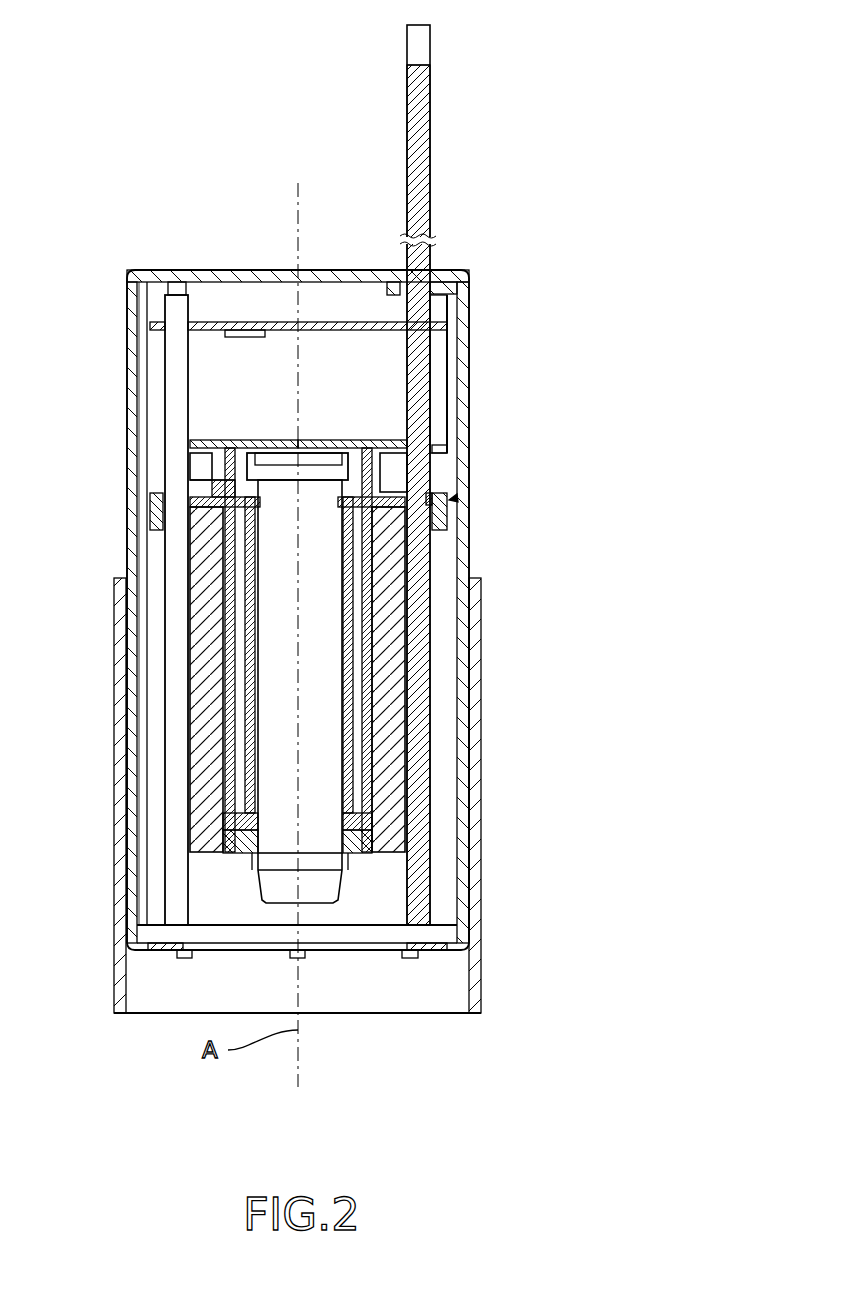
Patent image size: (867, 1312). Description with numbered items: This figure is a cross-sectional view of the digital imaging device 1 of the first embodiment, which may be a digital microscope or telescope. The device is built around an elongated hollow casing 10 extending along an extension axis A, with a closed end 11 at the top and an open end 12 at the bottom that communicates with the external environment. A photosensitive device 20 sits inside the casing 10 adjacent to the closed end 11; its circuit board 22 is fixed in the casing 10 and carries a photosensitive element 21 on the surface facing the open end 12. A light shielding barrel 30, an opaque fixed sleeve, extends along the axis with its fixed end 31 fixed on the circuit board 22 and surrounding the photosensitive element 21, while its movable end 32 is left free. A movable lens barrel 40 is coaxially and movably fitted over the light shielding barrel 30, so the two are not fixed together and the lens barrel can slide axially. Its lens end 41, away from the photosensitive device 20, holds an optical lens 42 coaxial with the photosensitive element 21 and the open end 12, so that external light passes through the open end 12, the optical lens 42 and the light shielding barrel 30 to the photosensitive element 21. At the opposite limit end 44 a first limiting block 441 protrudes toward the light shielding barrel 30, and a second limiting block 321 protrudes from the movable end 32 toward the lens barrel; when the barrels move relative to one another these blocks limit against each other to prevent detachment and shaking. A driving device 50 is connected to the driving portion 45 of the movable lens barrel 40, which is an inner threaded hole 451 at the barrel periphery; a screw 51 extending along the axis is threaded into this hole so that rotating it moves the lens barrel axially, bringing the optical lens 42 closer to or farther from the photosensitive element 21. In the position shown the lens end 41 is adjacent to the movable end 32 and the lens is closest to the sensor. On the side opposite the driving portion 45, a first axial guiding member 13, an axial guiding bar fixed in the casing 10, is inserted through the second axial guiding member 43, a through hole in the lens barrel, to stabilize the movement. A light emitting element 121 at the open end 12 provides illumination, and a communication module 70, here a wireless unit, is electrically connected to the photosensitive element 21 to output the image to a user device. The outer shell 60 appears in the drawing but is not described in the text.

The digital imaging device 1 is at (112, 210).
The casing 10 is at (463, 665).
The closed end 11 is at (218, 268).
The open end 12 is at (437, 947).
The light emitting element 121 is at (418, 956).
The first axial guiding member 13 is at (172, 548).
The photosensitive device 20 is at (308, 436).
The photosensitive element 21 is at (258, 445).
The circuit board 22 is at (398, 445).
The light shielding barrel 30 is at (352, 568).
The fixed end 31 is at (352, 510).
The movable end 32 is at (347, 805).
The second limiting block 321 is at (360, 825).
The movable lens barrel 40 is at (385, 728).
The lens end 41 is at (372, 856).
The optical lens 42 is at (302, 905).
The second axial guiding member 43 is at (190, 510).
The limit end 44 is at (208, 465).
The first limiting block 441 is at (220, 487).
The driving portion 45 is at (447, 500).
The inner threaded hole 451 is at (412, 487).
The driving device 50 is at (443, 208).
The screw 51 is at (436, 383).
The outer shell 60 is at (122, 878).
The communication module 70 is at (228, 333).